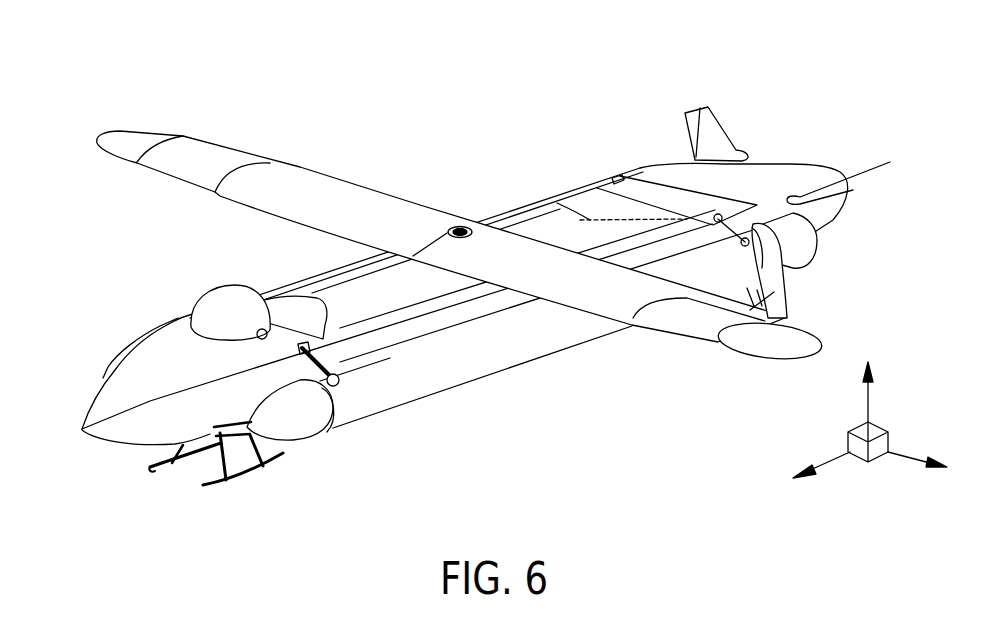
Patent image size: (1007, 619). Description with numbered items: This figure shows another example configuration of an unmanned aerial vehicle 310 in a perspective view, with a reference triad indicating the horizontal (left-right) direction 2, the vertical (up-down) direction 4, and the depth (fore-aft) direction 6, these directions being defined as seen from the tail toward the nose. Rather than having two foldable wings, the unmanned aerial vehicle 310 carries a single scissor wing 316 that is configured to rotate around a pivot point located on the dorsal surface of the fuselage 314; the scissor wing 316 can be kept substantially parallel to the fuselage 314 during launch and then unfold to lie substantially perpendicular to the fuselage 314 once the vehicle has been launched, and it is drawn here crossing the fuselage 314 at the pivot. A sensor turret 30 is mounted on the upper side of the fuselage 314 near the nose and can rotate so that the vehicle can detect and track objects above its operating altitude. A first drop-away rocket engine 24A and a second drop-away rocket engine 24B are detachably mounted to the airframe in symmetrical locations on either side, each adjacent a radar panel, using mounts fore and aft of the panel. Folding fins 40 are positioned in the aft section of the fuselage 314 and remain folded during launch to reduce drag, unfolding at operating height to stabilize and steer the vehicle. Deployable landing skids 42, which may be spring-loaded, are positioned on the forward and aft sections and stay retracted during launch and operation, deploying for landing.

The unmanned aerial vehicle 310 is at (472, 277).
The first drop-away rocket engine 24A is at (127, 343).
The second drop-away rocket engine 24B is at (516, 368).
The sensor turret 30 is at (213, 288).
The folding fins 40 is at (730, 123).
The deployable landing skids 42 is at (257, 478).
The fuselage 314 is at (637, 168).
The scissor wing 316 is at (690, 344).
The horizontal direction 2 is at (907, 457).
The vertical direction 4 is at (868, 410).
The depth direction 6 is at (830, 463).